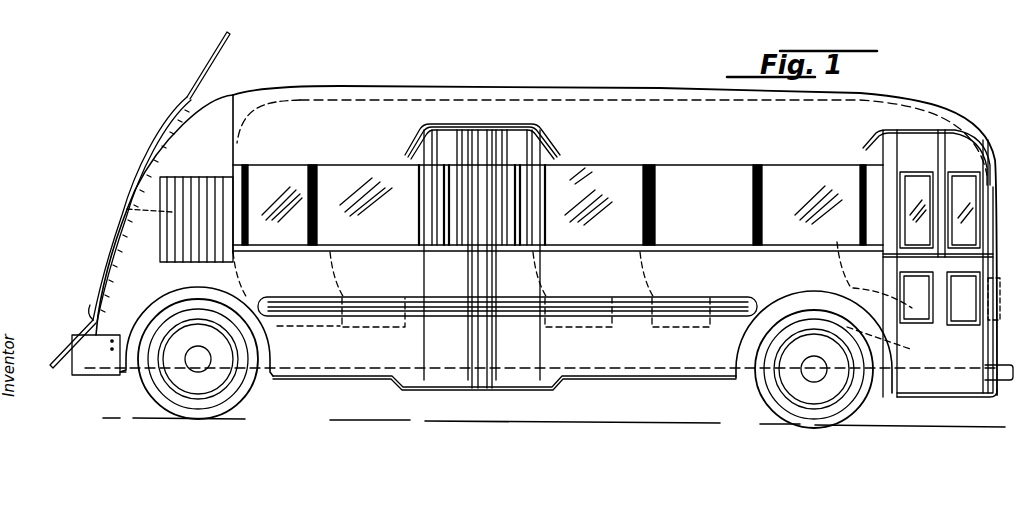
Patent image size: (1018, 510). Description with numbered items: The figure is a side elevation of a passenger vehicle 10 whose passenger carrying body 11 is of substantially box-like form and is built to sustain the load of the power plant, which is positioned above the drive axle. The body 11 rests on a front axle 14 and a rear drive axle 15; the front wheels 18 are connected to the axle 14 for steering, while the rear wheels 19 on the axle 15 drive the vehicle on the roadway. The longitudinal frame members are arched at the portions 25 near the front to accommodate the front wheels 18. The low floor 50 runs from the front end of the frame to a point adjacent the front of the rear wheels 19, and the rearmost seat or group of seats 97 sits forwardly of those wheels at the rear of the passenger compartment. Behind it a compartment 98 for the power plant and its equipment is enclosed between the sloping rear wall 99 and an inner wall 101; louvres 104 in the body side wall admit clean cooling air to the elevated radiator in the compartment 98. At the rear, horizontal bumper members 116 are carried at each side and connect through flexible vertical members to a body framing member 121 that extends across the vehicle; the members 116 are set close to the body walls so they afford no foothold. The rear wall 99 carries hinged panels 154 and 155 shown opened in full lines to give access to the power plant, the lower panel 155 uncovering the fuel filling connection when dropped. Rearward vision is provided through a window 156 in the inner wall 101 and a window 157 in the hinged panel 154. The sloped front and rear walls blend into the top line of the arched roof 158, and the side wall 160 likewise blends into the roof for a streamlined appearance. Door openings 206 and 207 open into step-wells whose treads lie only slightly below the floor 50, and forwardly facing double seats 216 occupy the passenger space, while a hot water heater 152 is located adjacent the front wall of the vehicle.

The vehicle 10 is at (380, 78).
The passenger carrying body 11 is at (646, 88).
The front axle 14 is at (814, 370).
The rear drive axle 15 is at (198, 362).
The front wheels 18 is at (851, 411).
The rear wheels 19 is at (236, 400).
The arched portions 25 is at (793, 292).
The floor 50 is at (605, 367).
The rearmost seat 97 is at (248, 283).
The compartment 98 is at (180, 153).
The rear wall 99 is at (125, 214).
The inner wall 101 is at (254, 134).
The louvres 104 is at (172, 250).
The horizontal members 116 is at (88, 343).
The body framing member 121 is at (90, 305).
The hot water heater 152 is at (988, 294).
The hinged panel 154 is at (200, 70).
The hinged panel 155 is at (88, 332).
The window 156 is at (237, 194).
The window 157 is at (177, 117).
The arched roof 158 is at (611, 88).
The side wall 160 is at (643, 153).
The door opening 206 is at (965, 408).
The door opening 207 is at (499, 0).
The double seats 216 is at (640, 268).